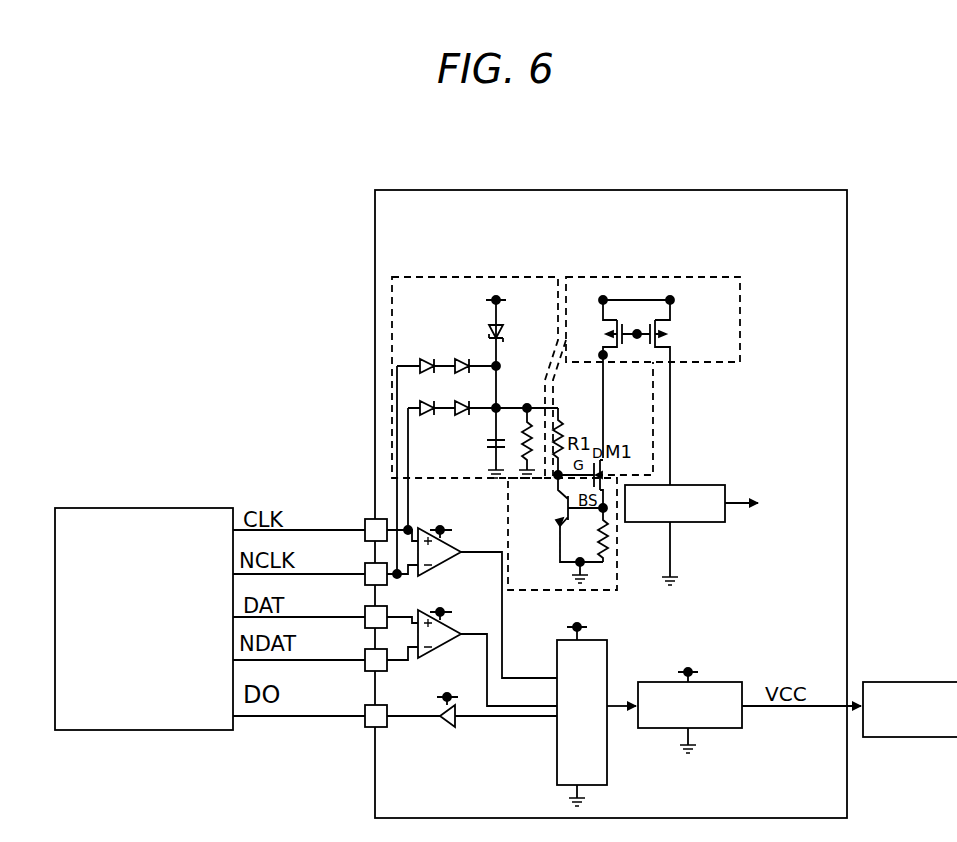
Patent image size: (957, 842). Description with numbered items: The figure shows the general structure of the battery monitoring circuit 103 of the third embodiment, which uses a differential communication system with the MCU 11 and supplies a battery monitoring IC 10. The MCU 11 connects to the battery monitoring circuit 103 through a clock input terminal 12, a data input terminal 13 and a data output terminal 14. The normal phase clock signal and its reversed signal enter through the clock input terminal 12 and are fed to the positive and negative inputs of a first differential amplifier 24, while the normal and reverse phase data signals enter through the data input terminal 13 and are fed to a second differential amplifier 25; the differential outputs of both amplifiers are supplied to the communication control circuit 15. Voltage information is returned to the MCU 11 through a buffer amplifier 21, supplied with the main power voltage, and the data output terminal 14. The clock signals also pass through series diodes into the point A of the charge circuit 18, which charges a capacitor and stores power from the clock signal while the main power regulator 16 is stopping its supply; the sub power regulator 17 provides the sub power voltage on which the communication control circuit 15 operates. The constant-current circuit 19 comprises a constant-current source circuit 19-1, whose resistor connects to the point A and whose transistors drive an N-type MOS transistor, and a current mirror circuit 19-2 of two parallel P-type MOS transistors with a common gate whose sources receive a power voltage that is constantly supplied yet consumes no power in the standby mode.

The battery monitoring IC 10 is at (890, 682).
The MCU 11 is at (177, 522).
The clock input terminal 12 is at (365, 572).
The data input terminal 13 is at (365, 658).
The data output terminal 14 is at (375, 729).
The communication control circuit 15 is at (607, 668).
The main power regulator 16 is at (656, 682).
The sub power regulator 17 is at (685, 485).
The charge circuit 18 is at (445, 277).
The constant-current circuit 19 is at (741, 331).
The constant-current source circuit 19-1 is at (545, 562).
The current mirror circuit 19-2 is at (626, 368).
The buffer amplifier 21 is at (441, 711).
The first differential amplifier 24 is at (461, 554).
The second differential amplifier 25 is at (461, 636).
The battery monitoring circuit 103 is at (597, 191).